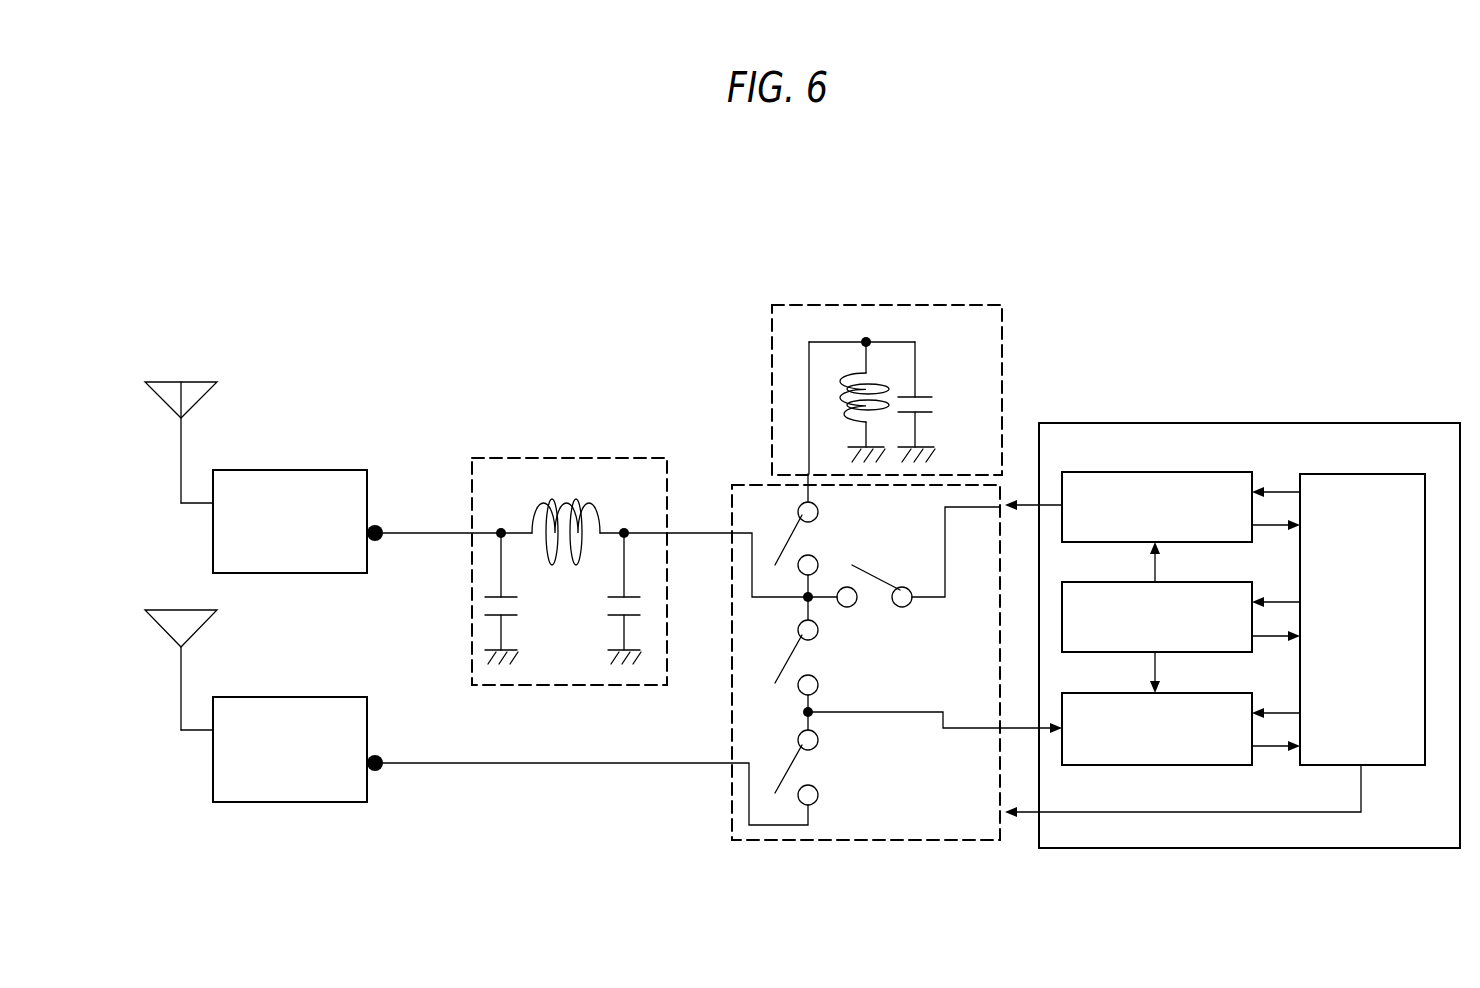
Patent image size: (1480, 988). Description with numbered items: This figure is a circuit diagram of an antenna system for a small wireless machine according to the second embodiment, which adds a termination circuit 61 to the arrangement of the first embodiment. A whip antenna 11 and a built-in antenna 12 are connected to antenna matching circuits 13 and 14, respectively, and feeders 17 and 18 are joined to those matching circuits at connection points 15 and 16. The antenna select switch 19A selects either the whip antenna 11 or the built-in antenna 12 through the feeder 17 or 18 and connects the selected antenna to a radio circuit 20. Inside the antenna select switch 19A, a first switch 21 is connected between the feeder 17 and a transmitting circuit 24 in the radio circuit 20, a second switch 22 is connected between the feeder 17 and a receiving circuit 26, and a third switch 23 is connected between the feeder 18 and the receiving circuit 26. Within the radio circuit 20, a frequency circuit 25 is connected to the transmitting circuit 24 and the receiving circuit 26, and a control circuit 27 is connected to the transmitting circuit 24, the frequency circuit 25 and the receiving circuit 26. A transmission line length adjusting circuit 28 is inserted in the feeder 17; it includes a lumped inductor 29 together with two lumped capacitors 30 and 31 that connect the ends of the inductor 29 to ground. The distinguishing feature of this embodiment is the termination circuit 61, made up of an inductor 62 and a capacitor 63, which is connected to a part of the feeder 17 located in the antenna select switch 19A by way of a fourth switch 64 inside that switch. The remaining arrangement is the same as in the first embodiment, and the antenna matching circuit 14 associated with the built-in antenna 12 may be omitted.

The whip antenna 11 is at (168, 381).
The built-in antenna 12 is at (163, 630).
The antenna matching circuit 13 is at (278, 470).
The antenna matching circuit 14 is at (278, 697).
The connection point 15 is at (381, 527).
The connection point 16 is at (381, 757).
The feeder 17 is at (697, 533).
The feeder 18 is at (696, 763).
The antenna select switch 19A is at (733, 841).
The radio circuit 20 is at (1190, 423).
The first switch 21 is at (878, 588).
The second switch 22 is at (797, 651).
The third switch 23 is at (797, 761).
The transmitting circuit 24 is at (1196, 472).
The frequency circuit 25 is at (1196, 582).
The receiving circuit 26 is at (1196, 693).
The control circuit 27 is at (1400, 767).
The transmission line length adjusting circuit 28 is at (486, 458).
The lumped inductor 29 is at (567, 491).
The lumped capacitor 30 is at (518, 605).
The lumped capacitor 31 is at (612, 608).
The termination circuit 61 is at (803, 305).
The inductor 62 is at (875, 386).
The capacitor 63 is at (934, 405).
The fourth switch 64 is at (797, 531).